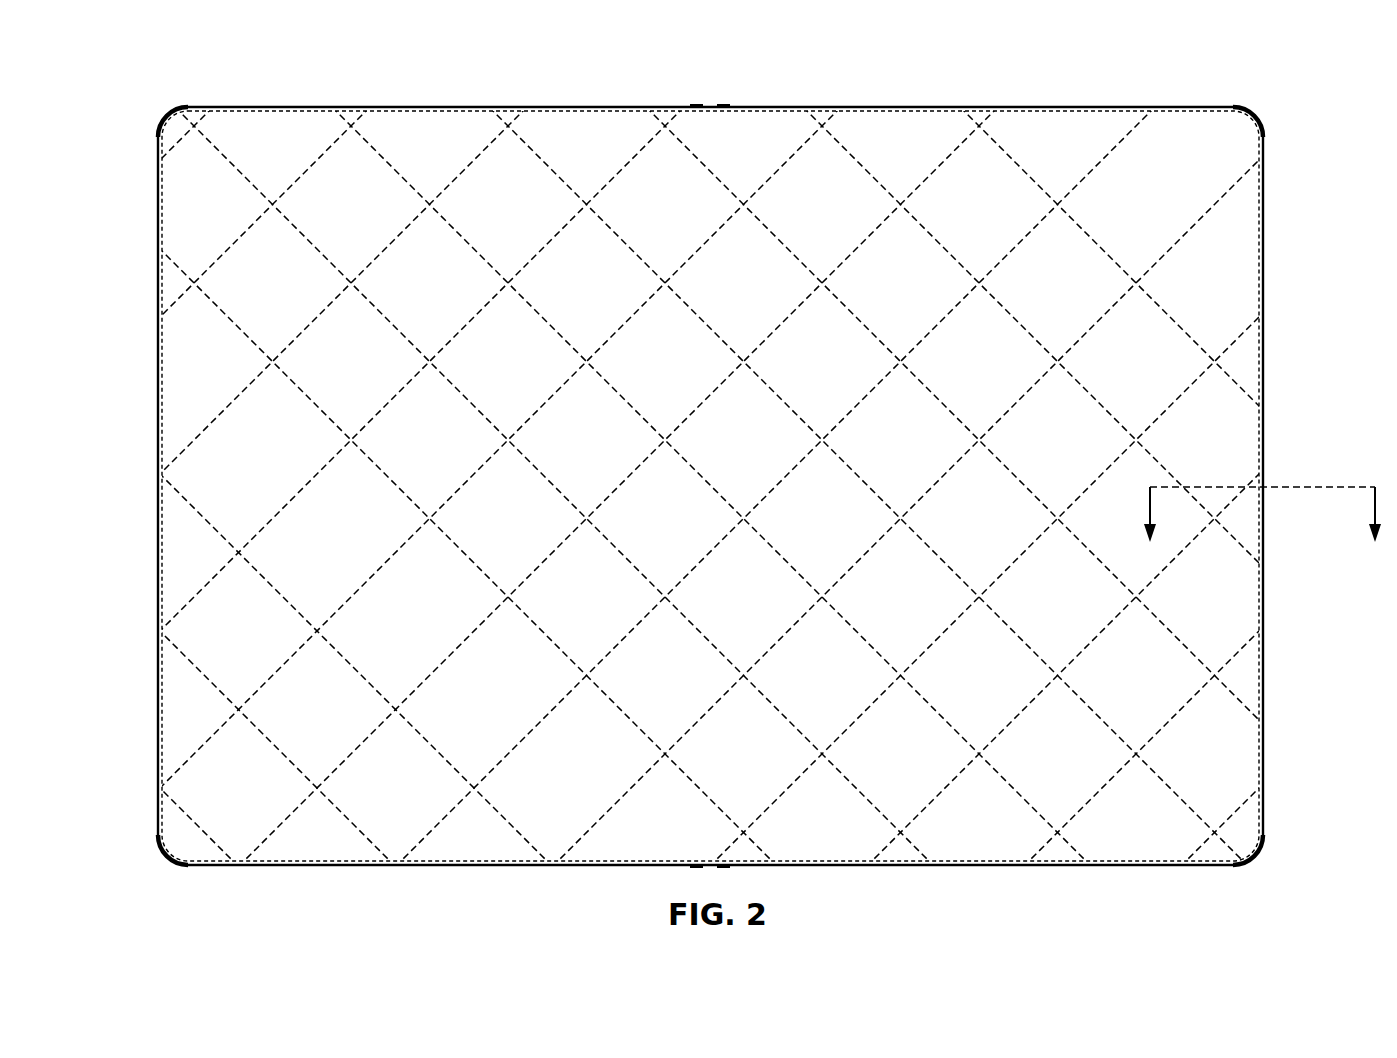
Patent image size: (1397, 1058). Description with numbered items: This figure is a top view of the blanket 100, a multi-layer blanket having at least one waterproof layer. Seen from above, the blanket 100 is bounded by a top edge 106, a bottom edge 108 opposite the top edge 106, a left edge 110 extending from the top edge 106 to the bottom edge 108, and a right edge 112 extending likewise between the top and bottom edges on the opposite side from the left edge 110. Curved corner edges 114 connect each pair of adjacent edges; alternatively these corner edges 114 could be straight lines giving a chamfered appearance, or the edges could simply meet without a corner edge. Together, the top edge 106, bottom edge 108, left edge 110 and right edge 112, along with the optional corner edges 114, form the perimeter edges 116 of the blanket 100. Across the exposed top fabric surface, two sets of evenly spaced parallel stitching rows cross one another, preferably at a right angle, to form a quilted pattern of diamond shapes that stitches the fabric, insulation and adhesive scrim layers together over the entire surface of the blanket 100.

The blanket 100 is at (128, 74).
The top edge 106 is at (1062, 105).
The bottom edge 108 is at (373, 870).
The left edge 110 is at (157, 657).
The right edge 112 is at (1262, 363).
The corner edges 114 is at (167, 855).
The perimeter edges 116 is at (293, 865).